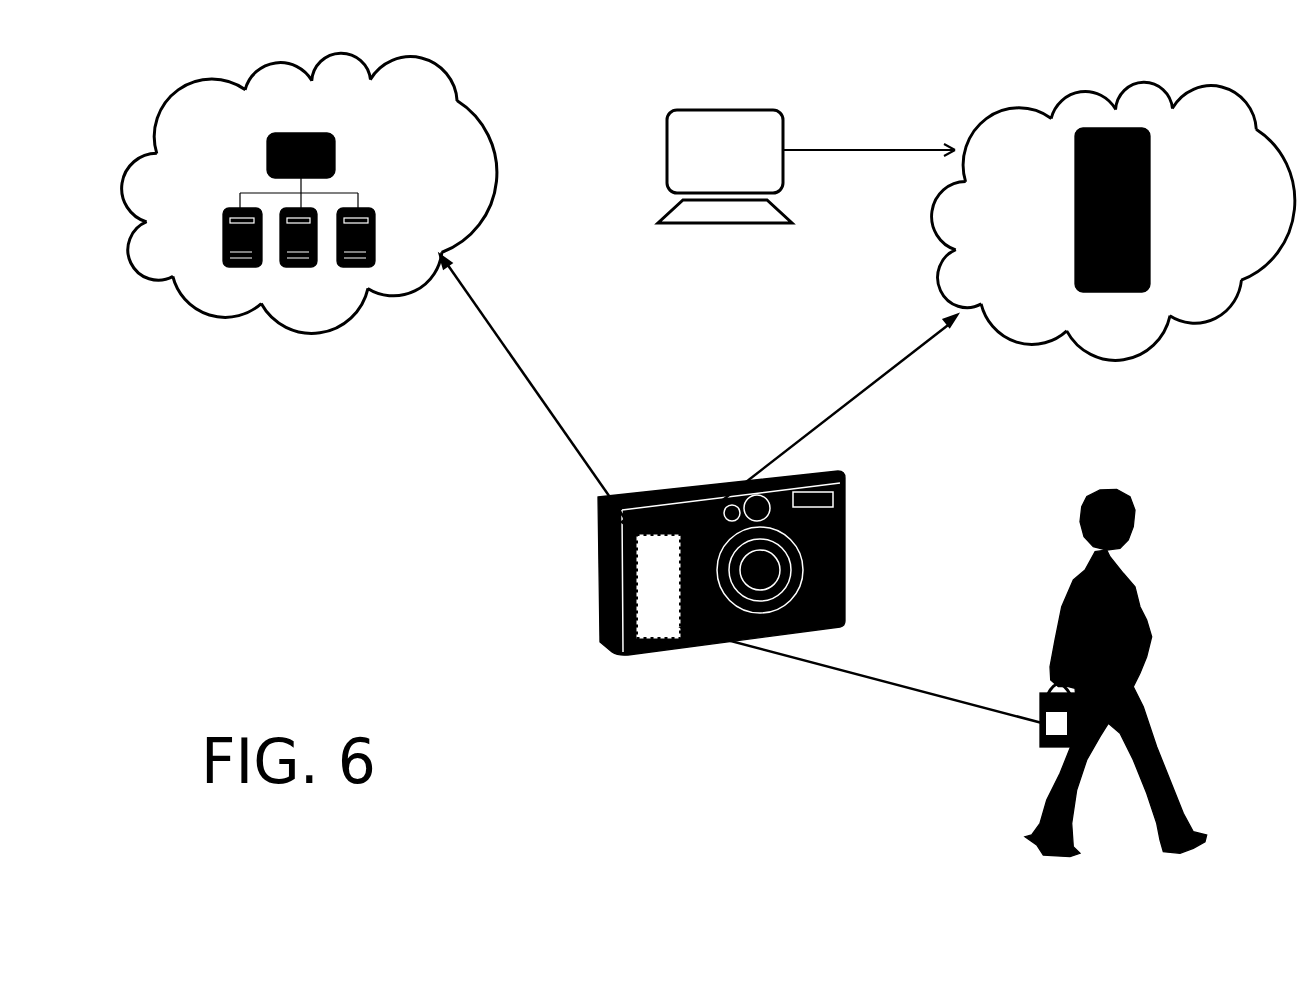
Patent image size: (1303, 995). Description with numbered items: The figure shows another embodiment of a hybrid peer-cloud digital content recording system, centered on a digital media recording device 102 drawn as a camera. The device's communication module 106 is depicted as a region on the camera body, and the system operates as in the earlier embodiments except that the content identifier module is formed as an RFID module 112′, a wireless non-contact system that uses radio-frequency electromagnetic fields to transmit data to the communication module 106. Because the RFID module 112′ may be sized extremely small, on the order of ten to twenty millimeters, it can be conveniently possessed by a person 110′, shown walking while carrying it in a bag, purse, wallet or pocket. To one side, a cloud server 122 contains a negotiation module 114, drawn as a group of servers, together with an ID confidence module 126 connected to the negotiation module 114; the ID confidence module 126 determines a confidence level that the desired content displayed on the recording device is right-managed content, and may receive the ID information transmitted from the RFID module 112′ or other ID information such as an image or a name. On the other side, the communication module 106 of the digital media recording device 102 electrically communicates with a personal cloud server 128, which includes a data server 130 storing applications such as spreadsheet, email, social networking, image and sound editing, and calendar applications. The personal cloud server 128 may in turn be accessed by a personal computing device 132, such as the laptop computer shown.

The digital media recording device 102 is at (817, 473).
The communication module 106 is at (635, 617).
The person 110′ is at (1123, 490).
The RFID module 112′ is at (1042, 733).
The negotiation module 114 is at (367, 210).
The cloud server 122 is at (193, 317).
The ID confidence module 126 is at (335, 140).
The personal cloud server 128 is at (1228, 318).
The data server 130 is at (1147, 180).
The personal computing device 132 is at (682, 225).